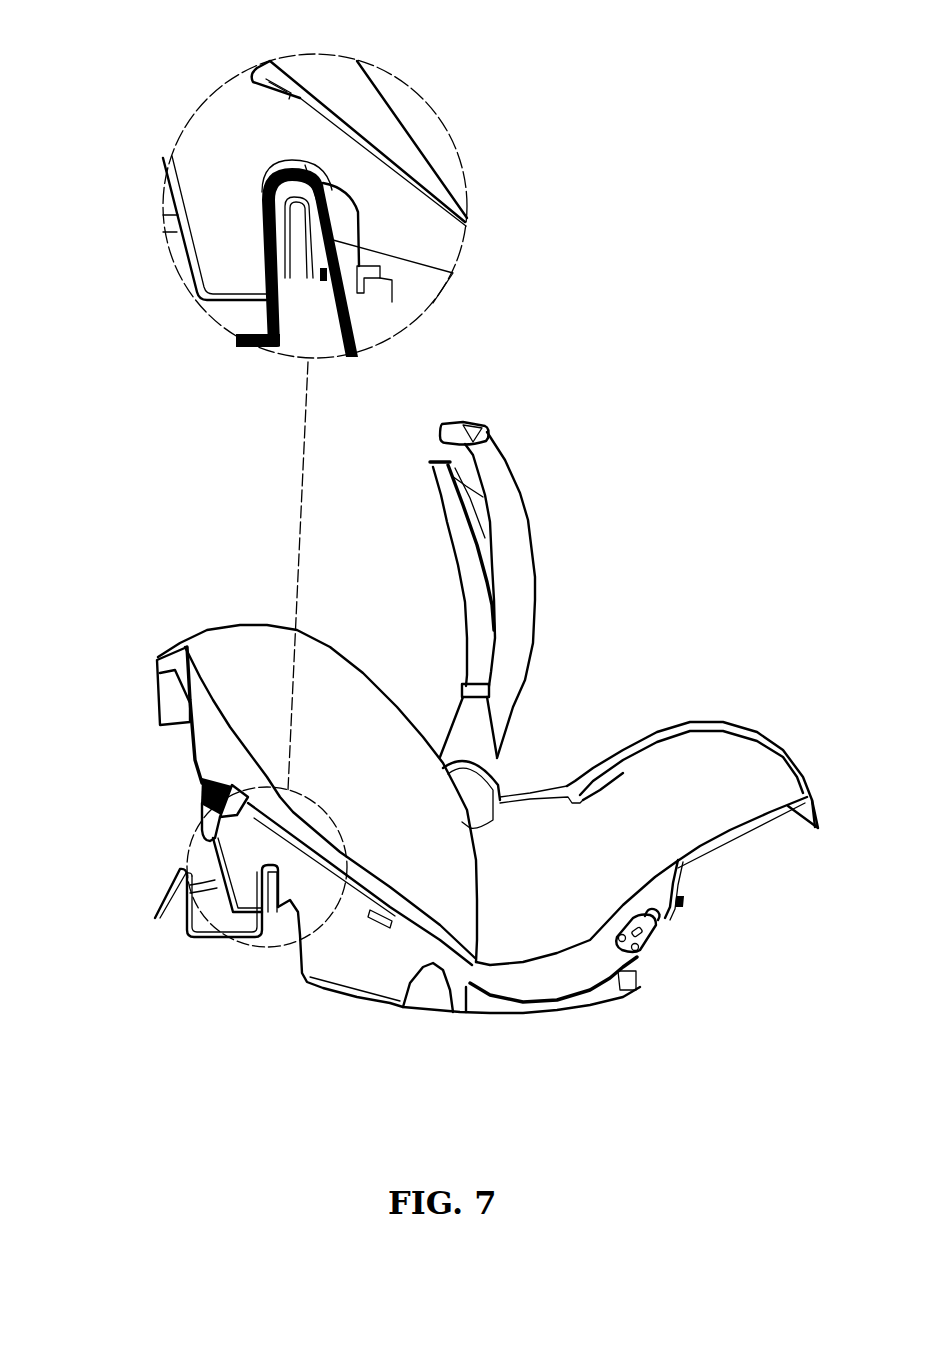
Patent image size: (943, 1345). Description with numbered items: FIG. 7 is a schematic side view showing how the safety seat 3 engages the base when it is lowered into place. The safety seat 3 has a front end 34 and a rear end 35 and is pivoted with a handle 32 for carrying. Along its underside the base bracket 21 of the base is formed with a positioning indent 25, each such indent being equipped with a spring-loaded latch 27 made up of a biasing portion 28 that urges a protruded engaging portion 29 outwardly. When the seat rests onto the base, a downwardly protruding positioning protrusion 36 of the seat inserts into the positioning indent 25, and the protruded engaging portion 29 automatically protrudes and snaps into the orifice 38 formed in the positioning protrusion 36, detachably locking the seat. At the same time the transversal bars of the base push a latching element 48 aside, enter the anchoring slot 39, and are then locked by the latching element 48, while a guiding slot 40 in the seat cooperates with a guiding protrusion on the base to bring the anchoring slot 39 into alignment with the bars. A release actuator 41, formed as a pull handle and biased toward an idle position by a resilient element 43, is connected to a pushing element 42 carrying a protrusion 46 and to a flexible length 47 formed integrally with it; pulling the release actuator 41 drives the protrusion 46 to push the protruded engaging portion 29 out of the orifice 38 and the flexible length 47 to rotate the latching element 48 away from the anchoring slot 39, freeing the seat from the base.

The safety seat 3 is at (135, 613).
The base bracket 21 is at (150, 905).
The positioning indent 25 is at (230, 323).
The spring-loaded latch 27 is at (273, 167).
The biasing portion 28 is at (275, 262).
The protruded engaging portion 29 is at (320, 253).
The handle 32 is at (505, 470).
The front end 34 is at (785, 772).
The rear end 35 is at (150, 690).
The positioning protrusion 36 is at (165, 197).
The orifice 38 is at (337, 238).
The anchoring slot 39 is at (686, 895).
The guiding slot 40 is at (426, 1005).
The release actuator 41 is at (250, 78).
The pushing element 42 is at (423, 220).
The resilient element 43 is at (197, 784).
The protrusion 46 is at (378, 282).
The flexible length 47 is at (590, 987).
The latching element 48 is at (652, 943).